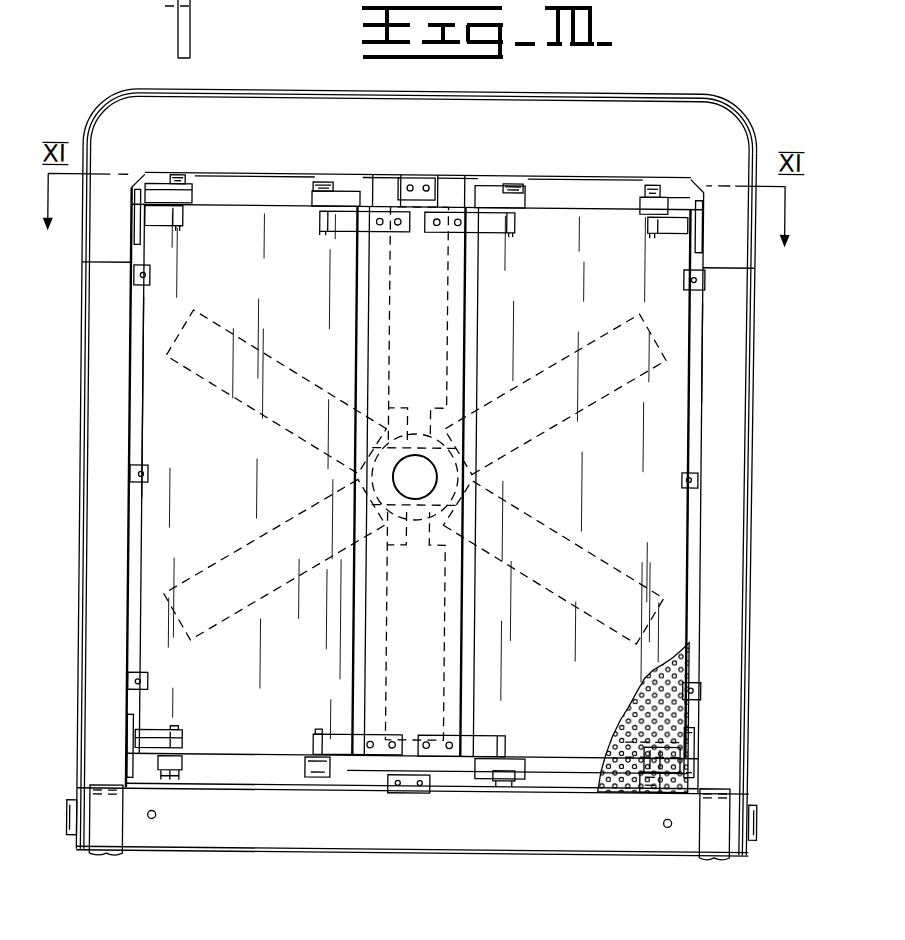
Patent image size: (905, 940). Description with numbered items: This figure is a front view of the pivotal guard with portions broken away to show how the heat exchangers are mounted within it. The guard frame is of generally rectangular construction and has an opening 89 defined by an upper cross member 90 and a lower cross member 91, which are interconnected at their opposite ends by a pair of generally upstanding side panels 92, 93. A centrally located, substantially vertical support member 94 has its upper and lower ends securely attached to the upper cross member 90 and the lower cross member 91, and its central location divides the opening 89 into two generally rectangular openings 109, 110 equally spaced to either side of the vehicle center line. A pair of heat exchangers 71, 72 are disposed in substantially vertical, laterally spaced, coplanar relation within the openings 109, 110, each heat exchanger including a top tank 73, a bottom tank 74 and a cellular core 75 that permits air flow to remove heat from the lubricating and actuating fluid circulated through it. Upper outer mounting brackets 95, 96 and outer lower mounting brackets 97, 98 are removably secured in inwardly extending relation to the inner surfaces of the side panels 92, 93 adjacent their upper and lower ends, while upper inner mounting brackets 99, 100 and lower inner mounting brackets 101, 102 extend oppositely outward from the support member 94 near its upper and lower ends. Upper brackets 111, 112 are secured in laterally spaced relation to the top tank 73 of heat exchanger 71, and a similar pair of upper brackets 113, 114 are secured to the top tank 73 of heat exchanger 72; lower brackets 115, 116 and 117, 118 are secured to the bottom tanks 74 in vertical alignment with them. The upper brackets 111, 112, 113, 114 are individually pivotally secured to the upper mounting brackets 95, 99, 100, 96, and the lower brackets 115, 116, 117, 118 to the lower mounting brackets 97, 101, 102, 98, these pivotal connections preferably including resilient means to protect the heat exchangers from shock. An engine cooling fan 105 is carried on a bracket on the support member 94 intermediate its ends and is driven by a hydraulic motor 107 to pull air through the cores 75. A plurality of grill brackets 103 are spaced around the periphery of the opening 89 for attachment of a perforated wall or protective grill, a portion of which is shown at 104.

The upper cross member 90 is at (525, 112).
The lower cross member 91 is at (418, 842).
The side panel 92 is at (80, 571).
The side panel 93 is at (743, 590).
The heat exchanger 71 is at (142, 340).
The heat exchanger 72 is at (686, 398).
The top tank 73 is at (266, 207).
The bottom tank 74 is at (238, 780).
The core 75 is at (308, 337).
The opening 89 is at (697, 449).
The support member 94 is at (429, 361).
The upper outer mounting bracket 95 is at (172, 230).
The upper outer mounting bracket 96 is at (684, 232).
The outer lower mounting bracket 97 is at (145, 747).
The outer lower mounting bracket 98 is at (690, 746).
The upper inner mounting bracket 99 is at (350, 224).
The upper inner mounting bracket 100 is at (492, 225).
The lower inner mounting bracket 101 is at (325, 735).
The lower inner mounting bracket 102 is at (467, 745).
The grill bracket 103 is at (418, 179).
The protective grill 104 is at (648, 692).
The engine cooling fan 105 is at (580, 424).
The hydraulic motor 107 is at (462, 483).
The rectangular opening 109 is at (142, 395).
The rectangular opening 110 is at (697, 352).
The upper bracket 111 is at (170, 186).
The upper bracket 112 is at (318, 192).
The upper bracket 113 is at (510, 196).
The upper bracket 114 is at (650, 183).
The lower bracket 115 is at (178, 782).
The lower bracket 116 is at (305, 780).
The lower bracket 117 is at (503, 785).
The lower bracket 118 is at (648, 792).